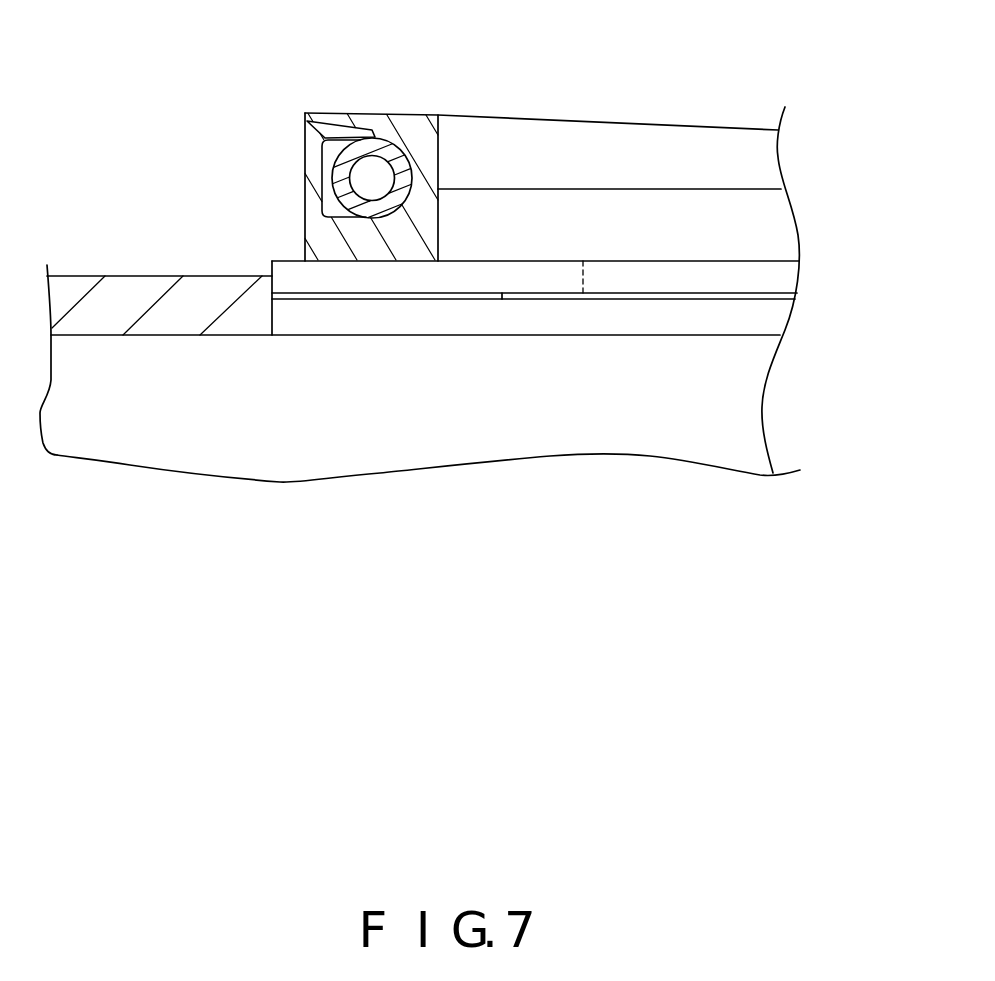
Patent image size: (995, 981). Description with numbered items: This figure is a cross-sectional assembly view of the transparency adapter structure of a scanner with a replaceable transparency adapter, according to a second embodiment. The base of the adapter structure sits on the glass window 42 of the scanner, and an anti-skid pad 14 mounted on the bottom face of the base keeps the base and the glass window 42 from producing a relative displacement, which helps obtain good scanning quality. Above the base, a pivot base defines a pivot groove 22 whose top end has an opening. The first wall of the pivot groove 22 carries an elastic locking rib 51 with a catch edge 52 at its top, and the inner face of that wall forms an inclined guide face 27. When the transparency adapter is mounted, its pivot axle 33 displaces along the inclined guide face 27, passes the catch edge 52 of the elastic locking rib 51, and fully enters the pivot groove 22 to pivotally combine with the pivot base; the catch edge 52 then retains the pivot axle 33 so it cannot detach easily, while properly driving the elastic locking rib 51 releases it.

The anti-skid pad 14 is at (478, 297).
The pivot groove 22 is at (395, 207).
The inclined guide face 27 is at (338, 124).
The pivot axle 33 is at (352, 168).
The glass window 42 is at (770, 323).
The elastic locking rib 51 is at (322, 184).
The catch edge 52 is at (358, 135).